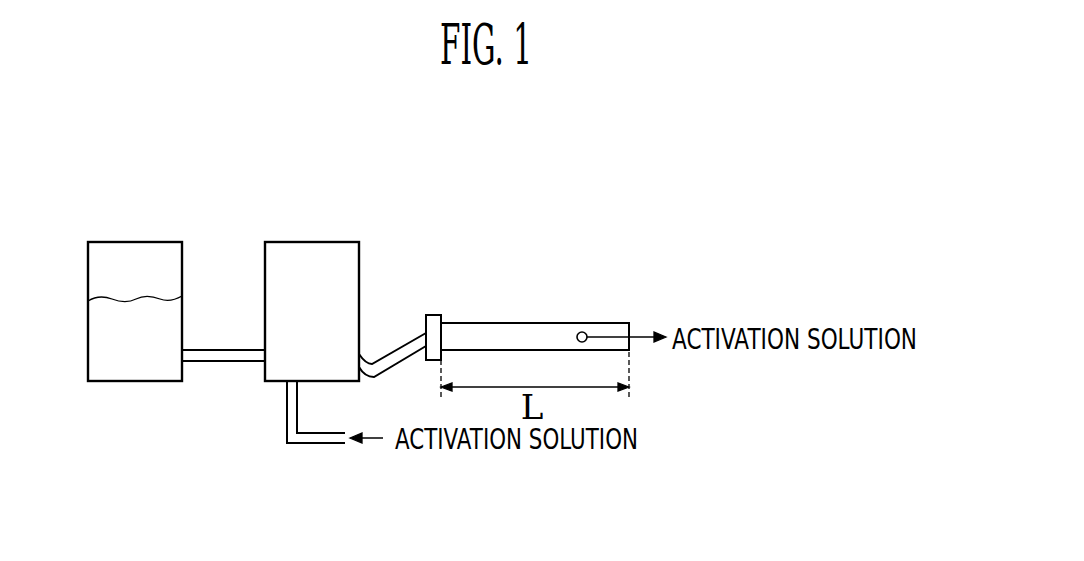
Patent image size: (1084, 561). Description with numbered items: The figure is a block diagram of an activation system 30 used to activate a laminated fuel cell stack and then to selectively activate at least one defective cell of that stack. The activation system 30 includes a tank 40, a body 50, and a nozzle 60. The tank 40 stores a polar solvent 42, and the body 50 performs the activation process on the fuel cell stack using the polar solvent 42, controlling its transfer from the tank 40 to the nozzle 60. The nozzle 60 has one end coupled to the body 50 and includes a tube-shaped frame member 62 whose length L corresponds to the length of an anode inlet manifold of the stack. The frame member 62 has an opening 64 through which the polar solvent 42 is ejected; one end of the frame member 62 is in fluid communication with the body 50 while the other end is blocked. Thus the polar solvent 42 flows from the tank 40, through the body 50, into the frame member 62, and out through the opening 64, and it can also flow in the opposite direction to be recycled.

The activation system 30 is at (146, 155).
The tank 40 is at (133, 242).
The polar solvent 42 is at (142, 362).
The body 50 is at (309, 242).
The nozzle 60 is at (549, 310).
The frame member 62 is at (492, 323).
The opening 64 is at (584, 332).